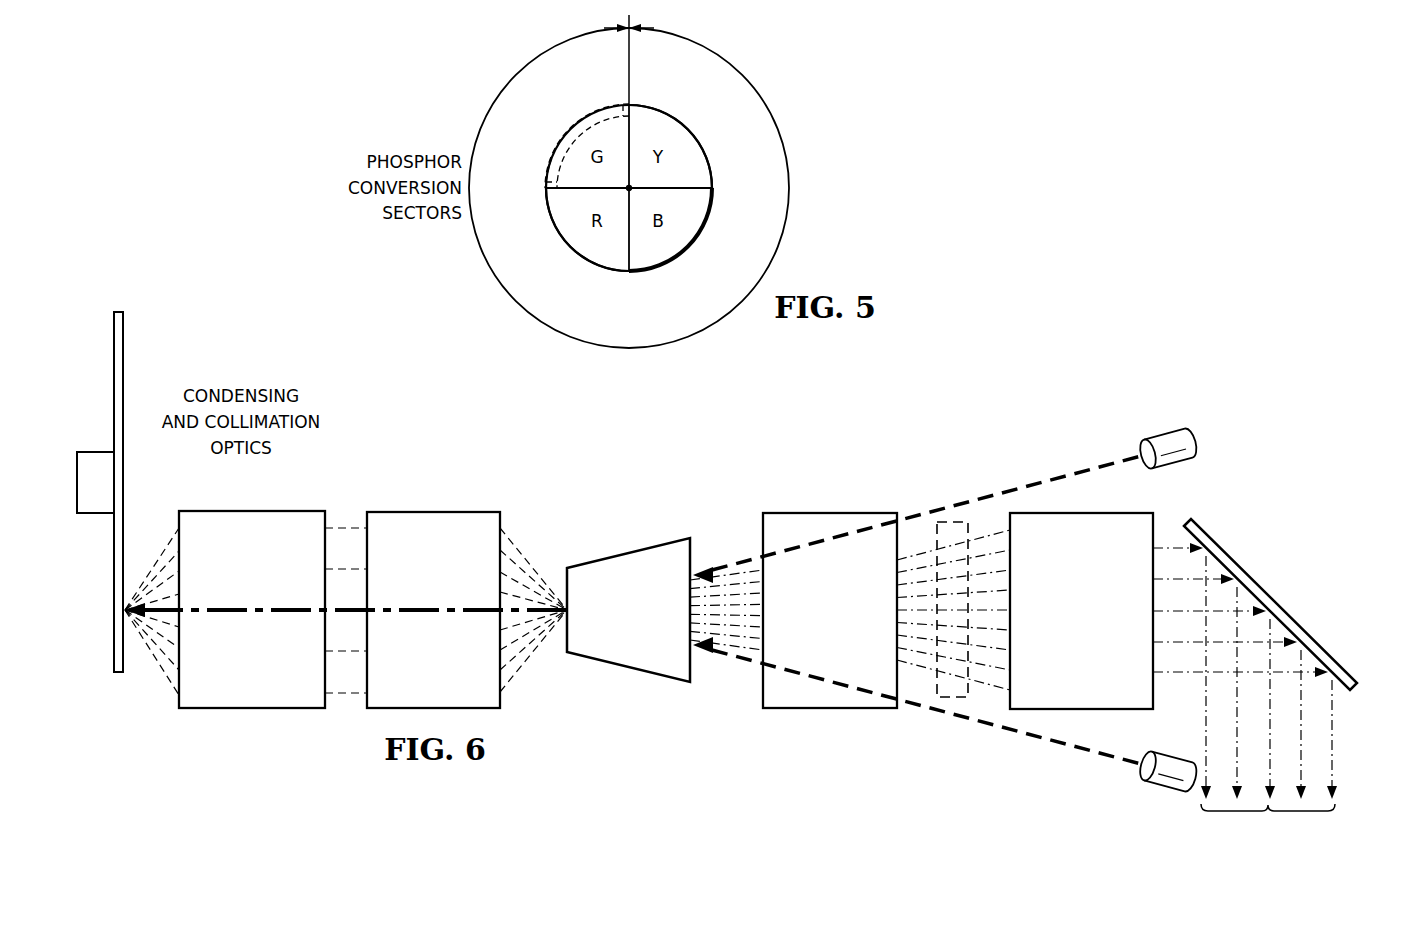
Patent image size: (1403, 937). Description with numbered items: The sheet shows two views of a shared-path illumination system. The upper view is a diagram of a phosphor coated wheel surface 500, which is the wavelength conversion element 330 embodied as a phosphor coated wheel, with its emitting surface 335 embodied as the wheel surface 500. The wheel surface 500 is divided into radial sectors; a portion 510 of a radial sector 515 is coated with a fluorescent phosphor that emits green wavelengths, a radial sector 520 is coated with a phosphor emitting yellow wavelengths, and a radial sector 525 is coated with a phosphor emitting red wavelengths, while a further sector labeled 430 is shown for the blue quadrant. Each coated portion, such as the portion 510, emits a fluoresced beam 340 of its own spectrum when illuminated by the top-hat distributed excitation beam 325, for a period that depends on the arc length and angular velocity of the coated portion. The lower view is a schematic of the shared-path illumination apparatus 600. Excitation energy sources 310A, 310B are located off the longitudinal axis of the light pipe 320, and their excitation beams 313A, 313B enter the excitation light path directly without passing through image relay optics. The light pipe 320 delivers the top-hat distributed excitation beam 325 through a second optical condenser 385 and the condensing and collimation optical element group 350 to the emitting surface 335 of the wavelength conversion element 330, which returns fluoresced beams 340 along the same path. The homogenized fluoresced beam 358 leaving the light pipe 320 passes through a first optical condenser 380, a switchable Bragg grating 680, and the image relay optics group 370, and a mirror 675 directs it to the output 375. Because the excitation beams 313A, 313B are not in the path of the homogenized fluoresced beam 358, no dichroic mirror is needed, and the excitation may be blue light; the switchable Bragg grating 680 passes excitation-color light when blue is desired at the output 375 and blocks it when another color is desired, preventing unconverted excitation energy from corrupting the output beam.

In FIG. 5, the phosphor coated wheel surface 500 is at (654, 103).
In FIG. 5, the portion 510 is at (584, 117).
In FIG. 5, the radial sector 515 is at (568, 183).
In FIG. 5, the radial sector 520 is at (685, 128).
In FIG. 5, the radial sector 525 is at (583, 247).
In FIG. 5, the blue sector 430 is at (670, 250).
In FIG. 6, the shared-path illumination apparatus 600 is at (1046, 394).
In FIG. 6, the optical wavelength conversion element 330 is at (118, 312).
In FIG. 6, the emitting surface 335 is at (125, 343).
In FIG. 6, the fluoresced beam 340 is at (161, 670).
In FIG. 6, the top-hat distributed excitation beam 325 is at (227, 609).
In FIG. 6, the condensing and collimation optical element group 350 is at (254, 511).
In FIG. 6, the second optical condenser 385 is at (432, 512).
In FIG. 6, the light pipe 320 is at (627, 555).
In FIG. 6, the homogenized fluoresced beam 358 is at (740, 652).
In FIG. 6, the excitation beam 313A is at (1120, 461).
In FIG. 6, the excitation beam 313B is at (1122, 761).
In FIG. 6, the excitation energy source 310A is at (1163, 432).
In FIG. 6, the excitation energy source 310B is at (1163, 787).
In FIG. 6, the first optical condenser 380 is at (828, 512).
In FIG. 6, the switchable Bragg grating 680 is at (953, 520).
In FIG. 6, the image relay optics group 370 is at (1102, 665).
In FIG. 6, the mirror 675 is at (1190, 524).
In FIG. 6, the output 375 is at (1267, 715).